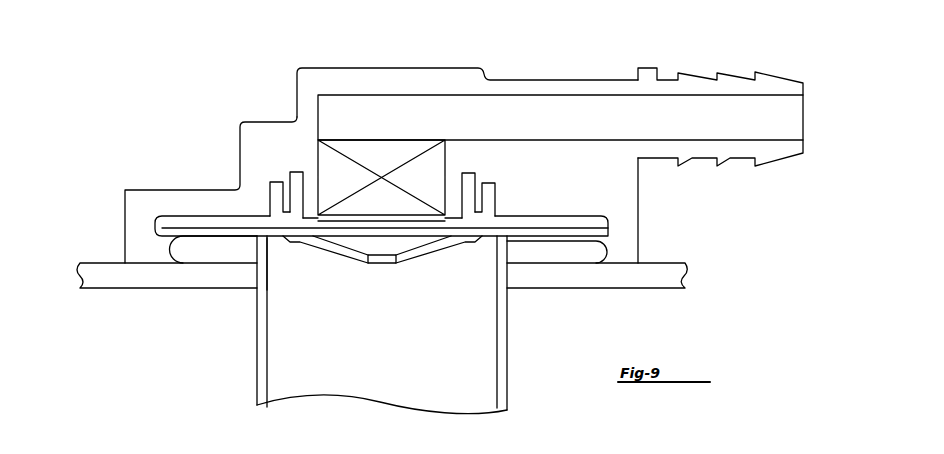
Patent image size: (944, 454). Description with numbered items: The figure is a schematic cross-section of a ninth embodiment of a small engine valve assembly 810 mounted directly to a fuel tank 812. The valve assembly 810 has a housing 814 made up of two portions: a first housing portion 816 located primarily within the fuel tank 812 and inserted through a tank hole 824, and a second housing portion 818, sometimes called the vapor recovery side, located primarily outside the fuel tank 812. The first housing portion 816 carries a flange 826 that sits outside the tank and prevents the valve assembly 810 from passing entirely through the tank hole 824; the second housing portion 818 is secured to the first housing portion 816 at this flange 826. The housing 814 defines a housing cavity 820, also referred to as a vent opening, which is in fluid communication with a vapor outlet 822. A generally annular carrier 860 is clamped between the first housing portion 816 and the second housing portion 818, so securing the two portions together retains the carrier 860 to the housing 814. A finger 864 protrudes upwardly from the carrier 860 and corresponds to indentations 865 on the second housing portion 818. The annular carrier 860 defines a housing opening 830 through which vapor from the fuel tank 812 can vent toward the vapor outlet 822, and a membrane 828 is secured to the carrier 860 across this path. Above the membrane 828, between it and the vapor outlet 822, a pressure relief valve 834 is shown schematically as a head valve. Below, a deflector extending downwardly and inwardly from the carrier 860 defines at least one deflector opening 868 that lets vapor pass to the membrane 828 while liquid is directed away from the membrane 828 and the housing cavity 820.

The valve assembly 810 is at (184, 96).
The fuel tank 812 is at (98, 284).
The housing 814 is at (162, 190).
The first housing portion 816 is at (260, 386).
The second housing portion 818 is at (640, 196).
The housing cavity 820 is at (342, 128).
The vapor outlet 822 is at (793, 127).
The tank hole 824 is at (274, 280).
The flange 826 is at (178, 258).
The membrane 828 is at (422, 233).
The housing opening 830 is at (560, 117).
The pressure relief valve 834 is at (386, 100).
The carrier 860 is at (160, 229).
The finger 864 is at (298, 188).
The indentations 865 is at (295, 172).
The deflector opening 868 is at (383, 259).